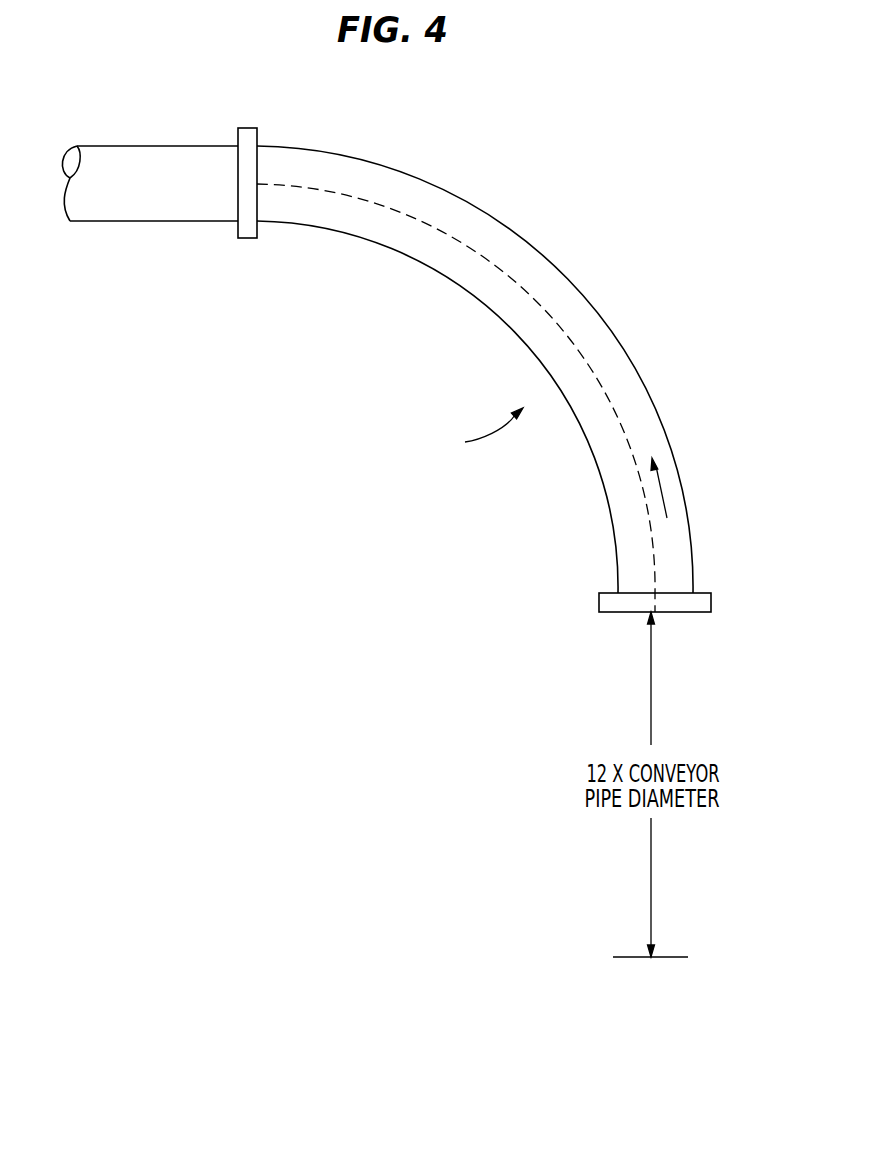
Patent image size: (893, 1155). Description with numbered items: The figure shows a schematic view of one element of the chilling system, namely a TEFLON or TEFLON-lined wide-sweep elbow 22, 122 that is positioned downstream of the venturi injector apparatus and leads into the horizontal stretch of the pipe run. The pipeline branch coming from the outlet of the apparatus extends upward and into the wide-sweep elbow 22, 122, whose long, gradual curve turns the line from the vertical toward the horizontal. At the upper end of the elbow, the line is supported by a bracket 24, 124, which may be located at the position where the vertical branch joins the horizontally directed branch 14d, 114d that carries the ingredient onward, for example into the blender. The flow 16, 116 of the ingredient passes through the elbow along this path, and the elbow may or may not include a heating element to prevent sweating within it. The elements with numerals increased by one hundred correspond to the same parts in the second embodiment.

The horizontally directed branch 14d is at (140, 146).
The horizontally directed branch 114d is at (137, 162).
The bracket 24 is at (238, 232).
The bracket 124 is at (202, 202).
The wide-sweep elbow 22 is at (640, 316).
The wide-sweep elbow 122 is at (505, 379).
The flow 16 is at (667, 492).
The flow 116 is at (507, 398).